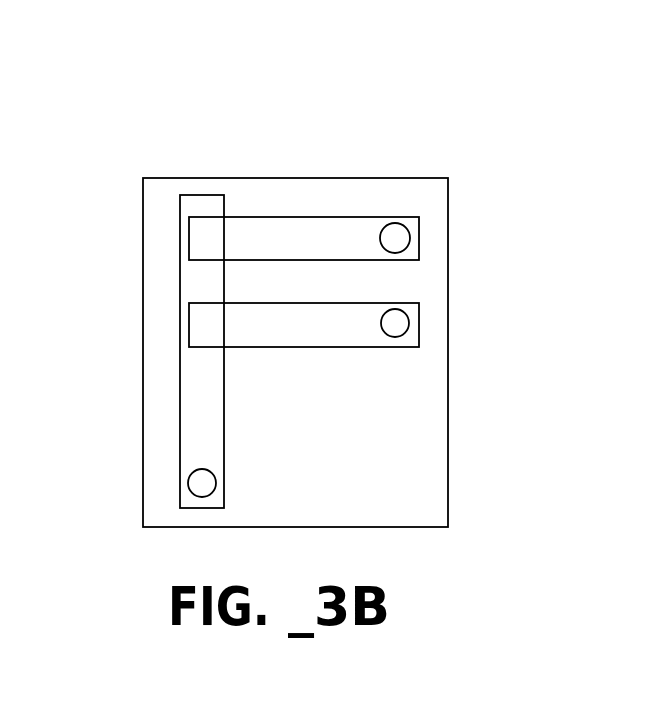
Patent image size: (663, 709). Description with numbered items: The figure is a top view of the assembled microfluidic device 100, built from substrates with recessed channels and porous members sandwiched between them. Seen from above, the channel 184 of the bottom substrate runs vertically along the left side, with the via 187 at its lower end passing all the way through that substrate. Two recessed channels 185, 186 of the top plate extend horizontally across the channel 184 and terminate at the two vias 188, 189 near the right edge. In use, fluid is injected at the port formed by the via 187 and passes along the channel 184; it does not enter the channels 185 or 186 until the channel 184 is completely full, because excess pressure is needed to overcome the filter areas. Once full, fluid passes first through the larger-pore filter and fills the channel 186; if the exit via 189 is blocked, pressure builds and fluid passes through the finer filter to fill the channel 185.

The microfluidic device 100 is at (104, 87).
The channel 184 is at (192, 393).
The recessed channel 185 is at (372, 235).
The recessed channel 186 is at (275, 312).
The via 187 is at (187, 483).
The via 188 is at (410, 237).
The via 189 is at (410, 322).